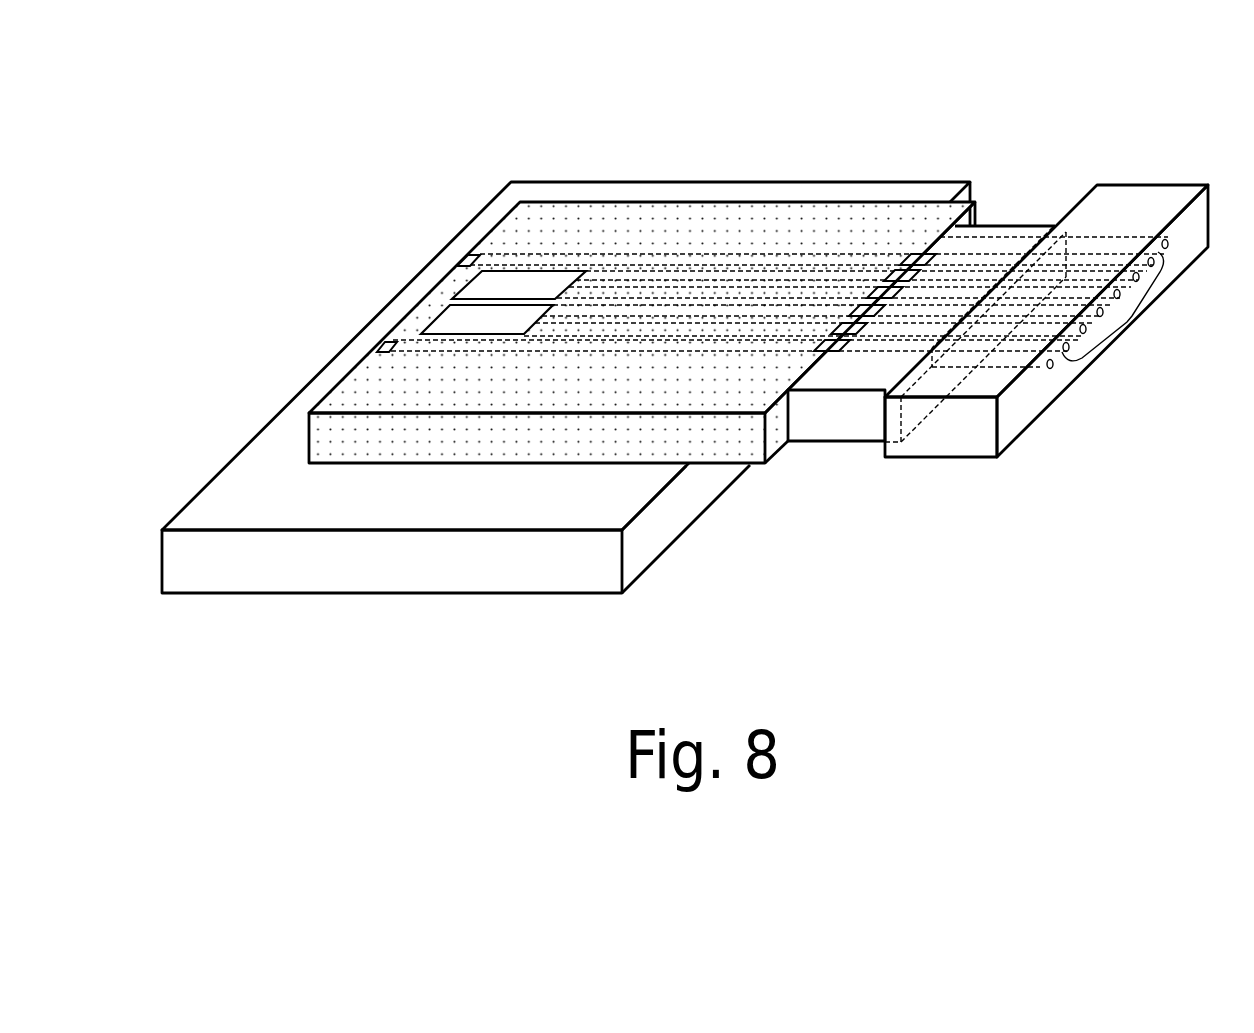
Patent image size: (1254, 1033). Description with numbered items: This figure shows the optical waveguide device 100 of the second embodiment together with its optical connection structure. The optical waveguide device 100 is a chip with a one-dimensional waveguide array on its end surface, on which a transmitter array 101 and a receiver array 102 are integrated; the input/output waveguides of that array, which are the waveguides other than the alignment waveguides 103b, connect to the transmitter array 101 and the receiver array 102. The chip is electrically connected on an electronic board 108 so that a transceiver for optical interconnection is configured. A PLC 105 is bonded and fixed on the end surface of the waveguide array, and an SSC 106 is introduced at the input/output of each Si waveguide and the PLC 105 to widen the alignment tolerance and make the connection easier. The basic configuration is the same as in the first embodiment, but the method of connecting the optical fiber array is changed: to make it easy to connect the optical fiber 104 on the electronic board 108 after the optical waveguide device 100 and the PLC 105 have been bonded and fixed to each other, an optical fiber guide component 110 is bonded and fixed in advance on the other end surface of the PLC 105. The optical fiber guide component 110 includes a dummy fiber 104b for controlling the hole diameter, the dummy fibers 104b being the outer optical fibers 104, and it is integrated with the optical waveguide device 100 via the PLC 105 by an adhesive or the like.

The optical waveguide device 100 is at (782, 220).
The transmitter array 101 is at (443, 320).
The receiver array 102 is at (488, 284).
The alignment waveguides 103b is at (687, 345).
The optical fiber 104 is at (1116, 306).
The dummy fiber 104b is at (1170, 244).
The PLC 105 is at (828, 425).
The SSC 106 is at (916, 247).
The electronic board 108 is at (517, 577).
The optical fiber guide component 110 is at (930, 440).